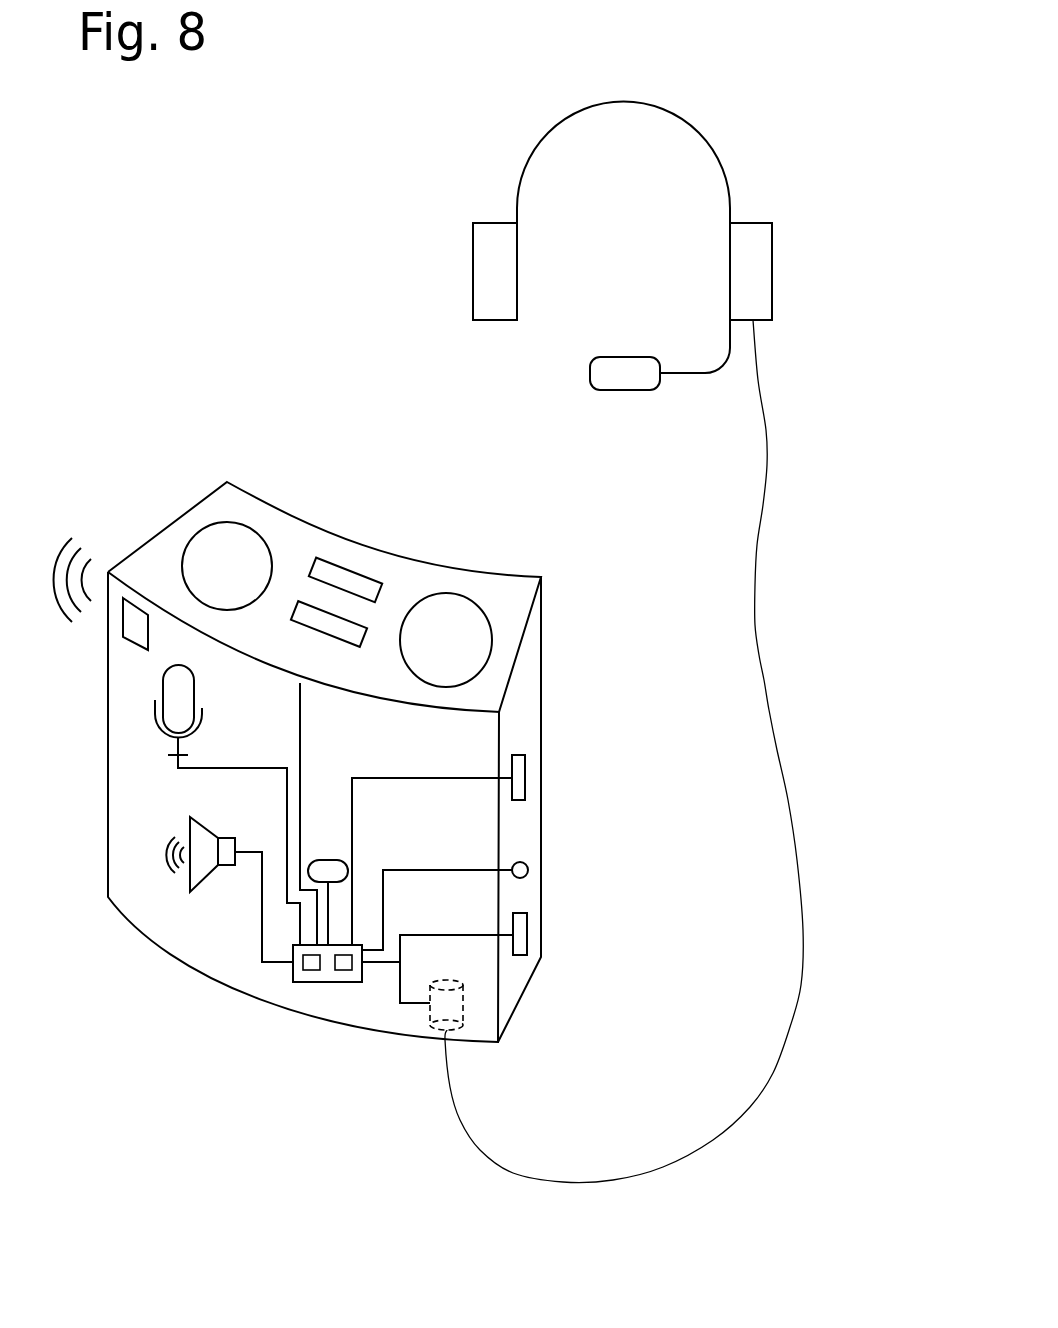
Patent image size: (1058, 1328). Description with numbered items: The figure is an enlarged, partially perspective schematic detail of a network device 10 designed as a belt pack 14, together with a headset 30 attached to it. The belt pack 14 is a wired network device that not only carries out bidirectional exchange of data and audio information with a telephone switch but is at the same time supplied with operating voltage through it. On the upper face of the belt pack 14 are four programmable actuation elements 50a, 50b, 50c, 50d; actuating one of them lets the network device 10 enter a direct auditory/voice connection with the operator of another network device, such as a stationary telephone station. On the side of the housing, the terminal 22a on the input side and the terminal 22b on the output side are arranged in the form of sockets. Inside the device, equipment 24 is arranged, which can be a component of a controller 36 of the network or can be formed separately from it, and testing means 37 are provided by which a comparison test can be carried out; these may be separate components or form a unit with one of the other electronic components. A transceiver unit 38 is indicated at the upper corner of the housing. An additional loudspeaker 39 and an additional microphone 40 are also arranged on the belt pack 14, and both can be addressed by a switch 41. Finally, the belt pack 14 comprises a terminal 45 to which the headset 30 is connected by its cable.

The network device 10 is at (433, 1107).
The belt pack 14 is at (347, 413).
The terminal on the input side 22a is at (533, 765).
The terminal on the output side 22b is at (533, 918).
The equipment 24 is at (345, 963).
The headset 30 is at (720, 103).
The controller 36 is at (323, 977).
The testing means 37 is at (310, 963).
The transceiver unit 38 is at (133, 622).
The additional loudspeaker 39 is at (203, 867).
The additional microphone 40 is at (182, 698).
The switch 41 is at (322, 872).
The terminal for connection of a headset 45 is at (433, 1047).
The programmable actuation element 50a is at (450, 628).
The programmable actuation element 50b is at (330, 573).
The programmable actuation element 50c is at (348, 630).
The programmable actuation element 50d is at (233, 565).